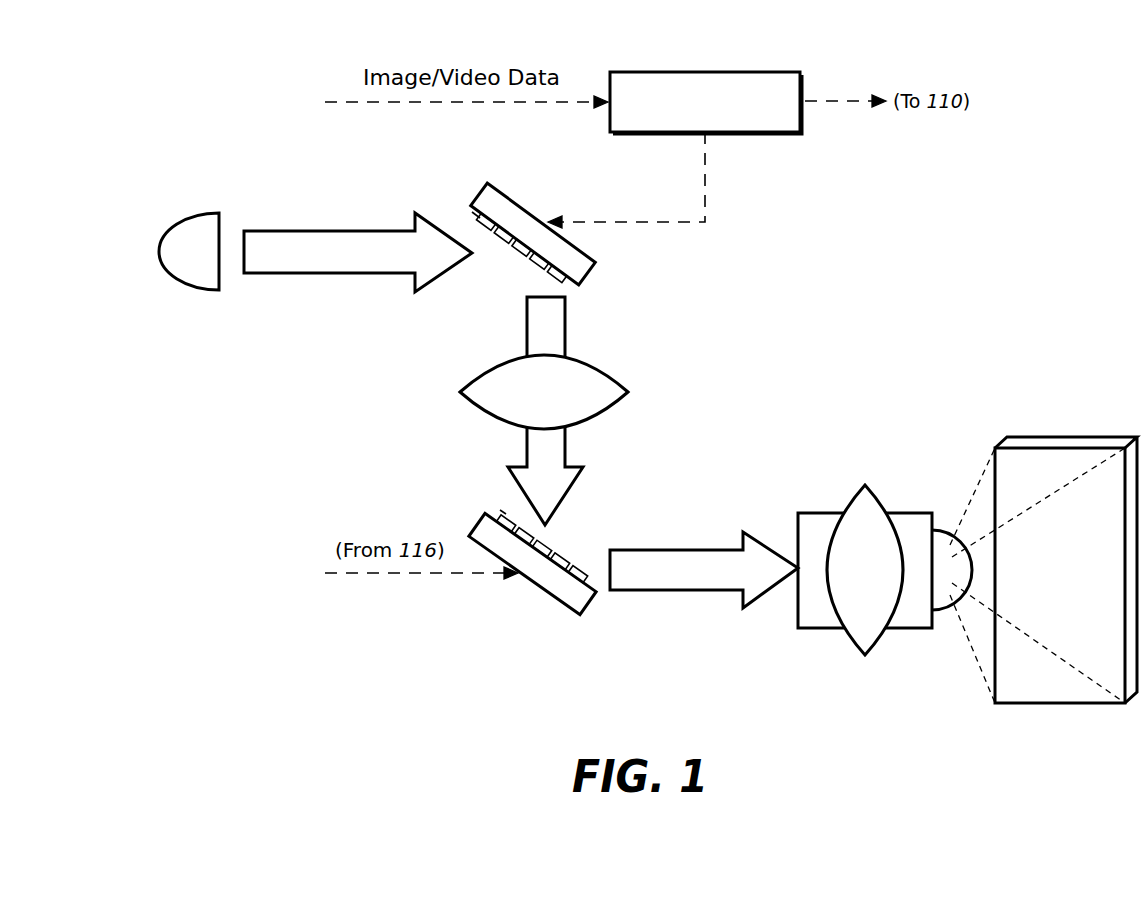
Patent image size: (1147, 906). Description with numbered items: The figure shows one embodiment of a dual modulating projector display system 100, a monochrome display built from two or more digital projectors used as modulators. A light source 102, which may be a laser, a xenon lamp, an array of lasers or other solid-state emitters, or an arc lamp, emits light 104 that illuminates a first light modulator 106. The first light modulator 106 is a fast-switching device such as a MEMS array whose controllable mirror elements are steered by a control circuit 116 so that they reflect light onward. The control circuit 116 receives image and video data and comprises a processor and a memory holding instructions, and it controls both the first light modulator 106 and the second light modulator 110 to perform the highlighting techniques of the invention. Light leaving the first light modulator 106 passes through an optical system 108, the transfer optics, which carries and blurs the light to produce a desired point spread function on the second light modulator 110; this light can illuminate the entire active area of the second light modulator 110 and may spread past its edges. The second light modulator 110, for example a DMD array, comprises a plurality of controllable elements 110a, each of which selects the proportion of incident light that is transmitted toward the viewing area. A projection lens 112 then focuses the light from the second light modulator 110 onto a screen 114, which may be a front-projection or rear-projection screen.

The dual modulating projector display system 100 is at (212, 58).
The light source 102 is at (210, 212).
The light 104 is at (327, 230).
The first light modulator 106 is at (530, 226).
The optical system 108 is at (579, 352).
The second light modulator 110 is at (536, 584).
The controllable elements 110a is at (511, 514).
The projection lens 112 is at (860, 492).
The screen 114 is at (1040, 437).
The control circuit 116 is at (680, 72).